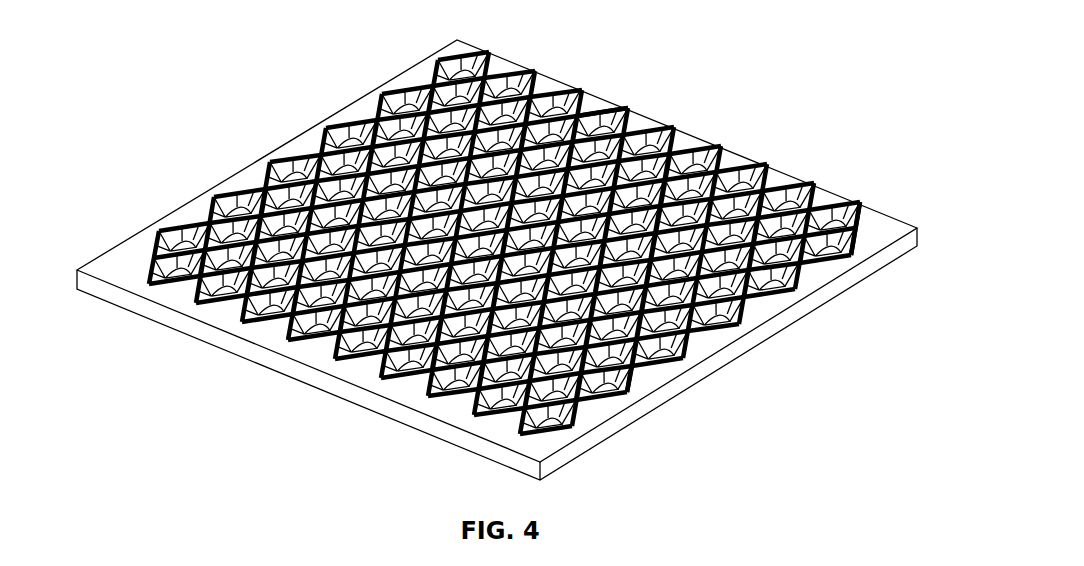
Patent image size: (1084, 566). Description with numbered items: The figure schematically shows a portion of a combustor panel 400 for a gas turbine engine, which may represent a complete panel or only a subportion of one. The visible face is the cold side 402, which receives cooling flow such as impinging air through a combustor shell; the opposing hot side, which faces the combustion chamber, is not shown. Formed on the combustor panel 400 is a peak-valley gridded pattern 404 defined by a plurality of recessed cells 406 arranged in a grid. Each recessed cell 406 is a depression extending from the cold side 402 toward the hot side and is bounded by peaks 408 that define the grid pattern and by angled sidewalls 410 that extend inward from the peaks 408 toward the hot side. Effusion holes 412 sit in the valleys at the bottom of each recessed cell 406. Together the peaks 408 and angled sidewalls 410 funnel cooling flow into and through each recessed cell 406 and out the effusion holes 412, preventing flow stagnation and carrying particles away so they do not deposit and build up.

The combustor panel 400 is at (511, 254).
The cold side 402 is at (883, 236).
The peak-valley gridded pattern 404 is at (547, 254).
The recessed cell 406 is at (513, 92).
The peak 408 is at (386, 118).
The angled sidewall 410 is at (717, 331).
The effusion hole 412 is at (612, 115).